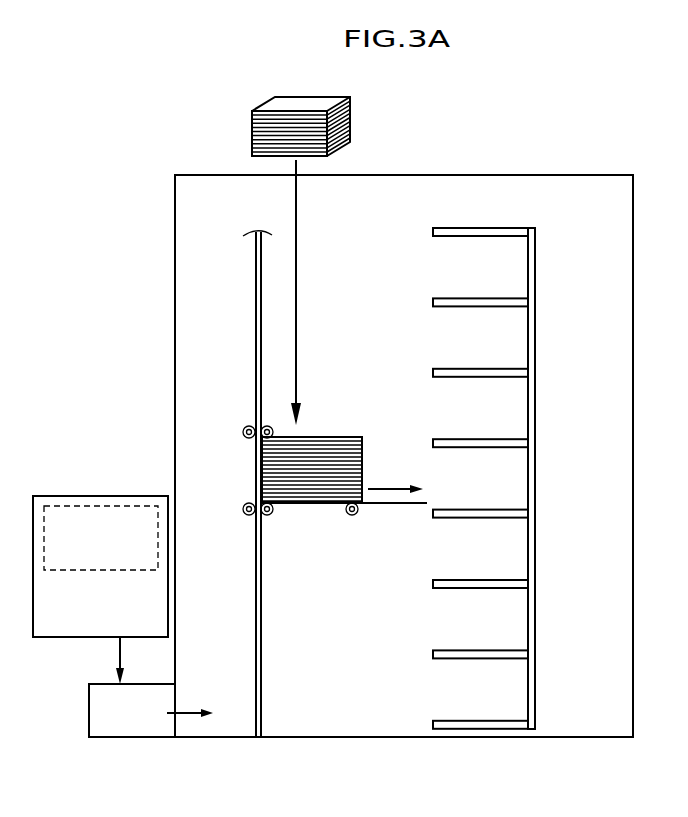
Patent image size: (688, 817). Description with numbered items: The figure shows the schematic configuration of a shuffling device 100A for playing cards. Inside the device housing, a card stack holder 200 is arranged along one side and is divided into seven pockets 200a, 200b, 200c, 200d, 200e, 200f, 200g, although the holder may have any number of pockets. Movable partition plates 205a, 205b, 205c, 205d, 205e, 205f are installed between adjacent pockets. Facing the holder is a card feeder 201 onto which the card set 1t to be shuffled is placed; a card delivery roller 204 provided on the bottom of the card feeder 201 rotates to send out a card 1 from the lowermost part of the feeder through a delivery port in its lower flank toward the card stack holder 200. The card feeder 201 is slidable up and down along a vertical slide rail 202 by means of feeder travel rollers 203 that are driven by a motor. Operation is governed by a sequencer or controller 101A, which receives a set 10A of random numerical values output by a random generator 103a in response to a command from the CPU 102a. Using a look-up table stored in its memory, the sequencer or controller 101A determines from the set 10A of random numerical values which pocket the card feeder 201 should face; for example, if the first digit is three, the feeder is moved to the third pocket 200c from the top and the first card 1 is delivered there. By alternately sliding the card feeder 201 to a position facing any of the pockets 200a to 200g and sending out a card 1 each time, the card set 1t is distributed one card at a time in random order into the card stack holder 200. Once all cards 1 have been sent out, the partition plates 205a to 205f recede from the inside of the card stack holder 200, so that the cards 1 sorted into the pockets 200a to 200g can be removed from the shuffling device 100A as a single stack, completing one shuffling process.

The shuffling device 100A is at (605, 168).
The card set 1t is at (251, 115).
The card 1 is at (412, 505).
The card feeder 201 is at (328, 437).
The slide rail 202 is at (262, 607).
The feeder travel rollers 203 is at (262, 428).
The card delivery roller 204 is at (353, 515).
The card stack holder 200 is at (507, 229).
The pocket 200a is at (513, 262).
The pocket 200b is at (513, 332).
The pocket 200c is at (513, 402).
The pocket 200d is at (513, 470).
The pocket 200e is at (513, 547).
The pocket 200f is at (513, 612).
The pocket 200g is at (513, 685).
The movable partition plate 205a is at (507, 297).
The movable partition plate 205b is at (507, 367).
The movable partition plate 205c is at (507, 438).
The movable partition plate 205d is at (507, 508).
The movable partition plate 205e is at (507, 579).
The movable partition plate 205f is at (507, 649).
The CPU 102a is at (100, 566).
The random generator 103a is at (101, 538).
The sequencer or controller 101A is at (132, 710).
The set of random numerical values 10A is at (117, 662).